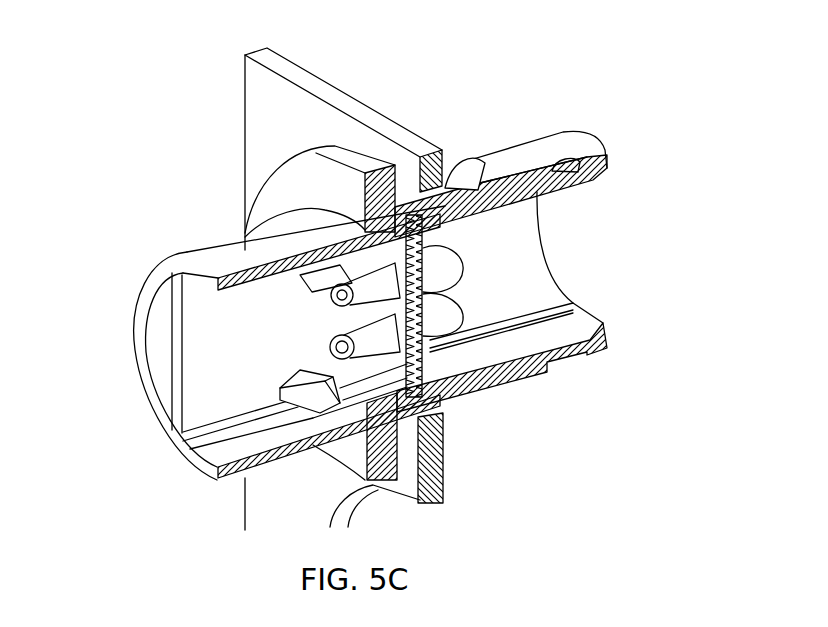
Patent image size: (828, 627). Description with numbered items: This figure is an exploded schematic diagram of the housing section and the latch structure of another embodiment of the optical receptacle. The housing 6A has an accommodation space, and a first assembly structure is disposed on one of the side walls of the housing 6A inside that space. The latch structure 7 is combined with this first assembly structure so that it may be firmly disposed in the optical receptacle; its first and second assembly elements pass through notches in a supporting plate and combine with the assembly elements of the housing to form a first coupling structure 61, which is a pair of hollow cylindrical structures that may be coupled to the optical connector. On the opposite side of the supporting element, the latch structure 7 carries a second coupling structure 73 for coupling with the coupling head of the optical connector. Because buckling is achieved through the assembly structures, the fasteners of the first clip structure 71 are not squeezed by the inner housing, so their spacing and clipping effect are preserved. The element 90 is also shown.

The mounting plate 90 is at (245, 137).
The housing 6A is at (188, 250).
The second coupling structure 73 is at (447, 264).
The first clip structure 71 is at (307, 288).
The latch structure 7 is at (283, 397).
The first coupling structure 61 is at (373, 358).